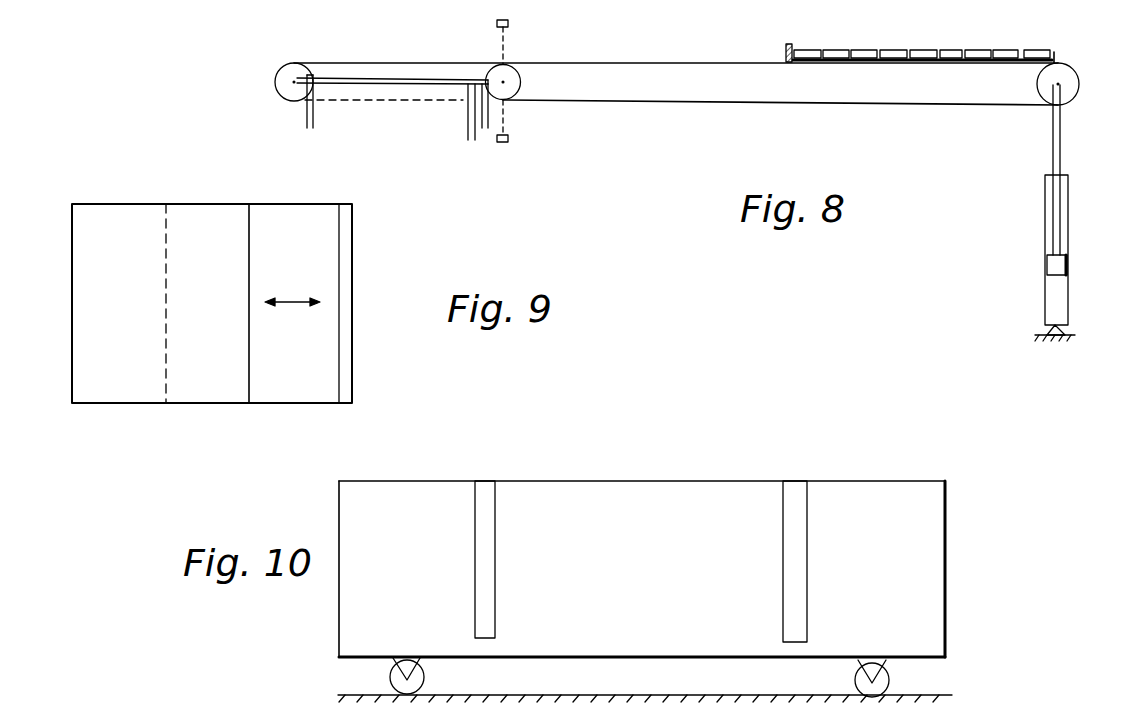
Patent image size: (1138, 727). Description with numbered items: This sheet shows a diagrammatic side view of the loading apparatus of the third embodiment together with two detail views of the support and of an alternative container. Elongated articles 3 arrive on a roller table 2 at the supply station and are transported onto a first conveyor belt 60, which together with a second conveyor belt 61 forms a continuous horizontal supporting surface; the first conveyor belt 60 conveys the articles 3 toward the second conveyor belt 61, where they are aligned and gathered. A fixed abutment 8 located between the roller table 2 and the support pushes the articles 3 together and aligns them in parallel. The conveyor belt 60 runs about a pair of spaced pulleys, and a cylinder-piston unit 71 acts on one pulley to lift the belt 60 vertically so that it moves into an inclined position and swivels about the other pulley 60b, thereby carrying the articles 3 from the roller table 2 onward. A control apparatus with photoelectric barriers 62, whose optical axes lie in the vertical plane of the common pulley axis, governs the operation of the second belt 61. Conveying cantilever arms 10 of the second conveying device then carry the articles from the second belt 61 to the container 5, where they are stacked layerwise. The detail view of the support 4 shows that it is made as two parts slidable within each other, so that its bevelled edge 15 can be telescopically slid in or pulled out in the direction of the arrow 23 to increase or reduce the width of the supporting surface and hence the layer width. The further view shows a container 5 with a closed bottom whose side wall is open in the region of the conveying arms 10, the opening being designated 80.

In FIG. 8, the roller table 2 is at (968, 60).
In FIG. 8, the elongated articles 3 is at (884, 60).
In FIG. 9, the stationary support 4 is at (115, 403).
In FIG. 10, the container 5 is at (947, 587).
In FIG. 8, the fixed abutment 8 is at (786, 53).
In FIG. 8, the conveying cantilever arms 10 is at (414, 85).
In FIG. 9, the bevelled edge 15 is at (343, 357).
In FIG. 9, the arrow 23 is at (295, 301).
In FIG. 8, the first conveyor belt 60 is at (680, 63).
In FIG. 8, the pulley 60b is at (516, 100).
In FIG. 8, the second conveyor belt 61 is at (401, 61).
In FIG. 8, the photoelectric barriers 62 is at (509, 43).
In FIG. 8, the cylinder-piston unit 71 is at (1069, 265).
In FIG. 10, the opening in the side wall 80 is at (488, 523).